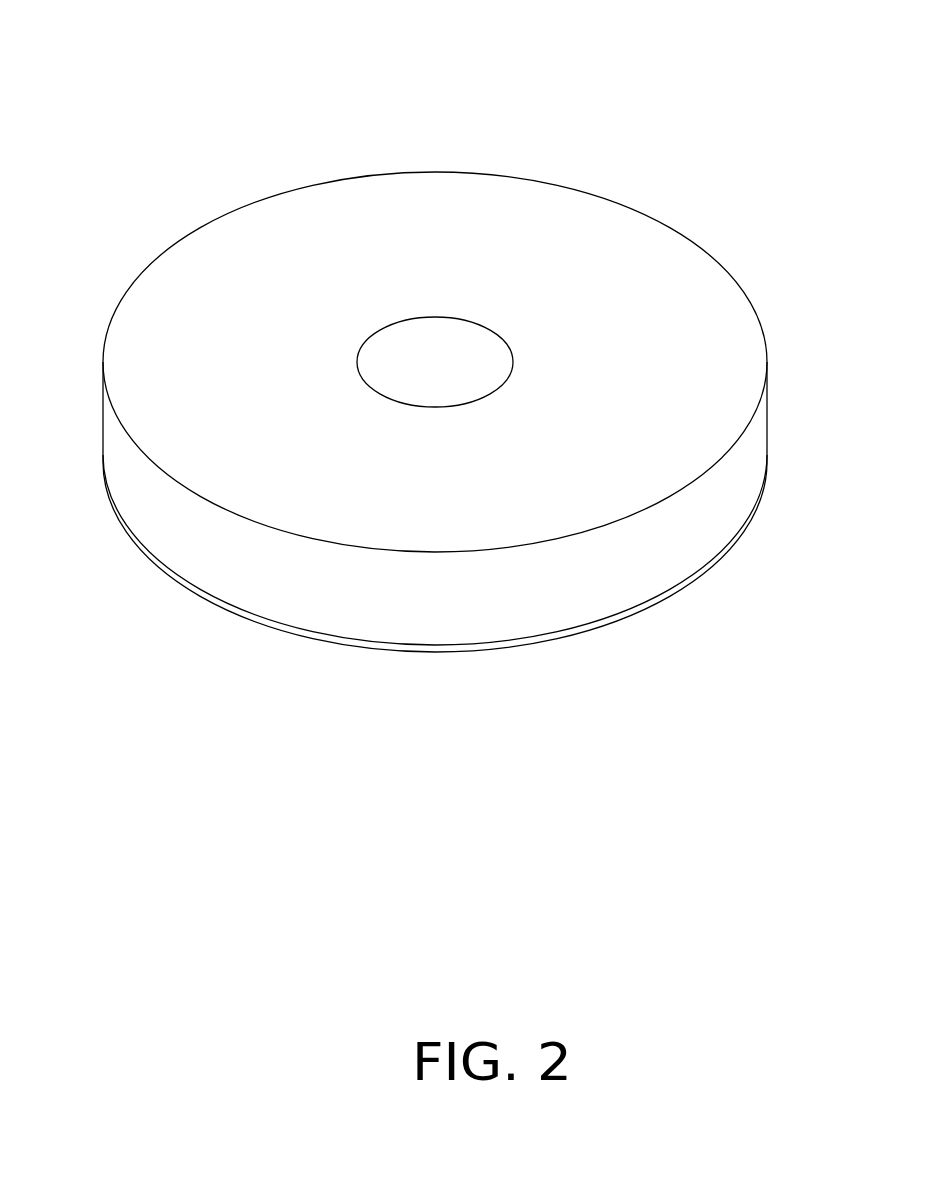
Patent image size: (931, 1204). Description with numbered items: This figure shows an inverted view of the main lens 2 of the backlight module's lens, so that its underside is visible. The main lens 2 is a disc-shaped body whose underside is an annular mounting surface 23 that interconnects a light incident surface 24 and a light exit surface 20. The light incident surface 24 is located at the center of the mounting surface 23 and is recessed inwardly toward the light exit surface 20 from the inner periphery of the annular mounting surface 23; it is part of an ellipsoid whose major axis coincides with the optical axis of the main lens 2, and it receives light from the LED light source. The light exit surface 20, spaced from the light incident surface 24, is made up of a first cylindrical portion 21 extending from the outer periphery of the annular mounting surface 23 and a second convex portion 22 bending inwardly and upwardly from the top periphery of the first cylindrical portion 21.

The main lens 2 is at (445, 62).
The light exit surface 20 is at (598, 722).
The first cylindrical portion 21 is at (555, 577).
The second convex portion 22 is at (477, 647).
The annular mounting surface 23 is at (652, 253).
The light incident surface 24 is at (475, 350).